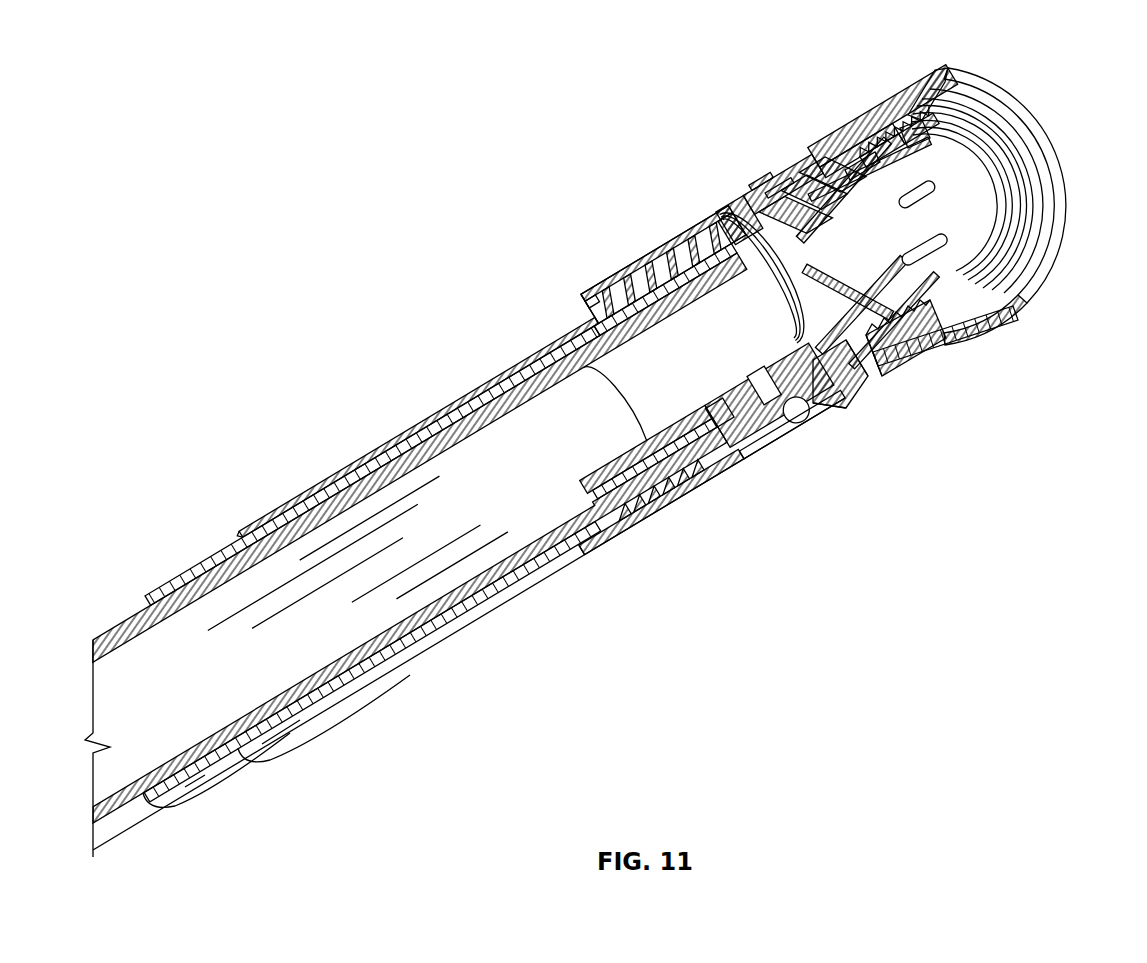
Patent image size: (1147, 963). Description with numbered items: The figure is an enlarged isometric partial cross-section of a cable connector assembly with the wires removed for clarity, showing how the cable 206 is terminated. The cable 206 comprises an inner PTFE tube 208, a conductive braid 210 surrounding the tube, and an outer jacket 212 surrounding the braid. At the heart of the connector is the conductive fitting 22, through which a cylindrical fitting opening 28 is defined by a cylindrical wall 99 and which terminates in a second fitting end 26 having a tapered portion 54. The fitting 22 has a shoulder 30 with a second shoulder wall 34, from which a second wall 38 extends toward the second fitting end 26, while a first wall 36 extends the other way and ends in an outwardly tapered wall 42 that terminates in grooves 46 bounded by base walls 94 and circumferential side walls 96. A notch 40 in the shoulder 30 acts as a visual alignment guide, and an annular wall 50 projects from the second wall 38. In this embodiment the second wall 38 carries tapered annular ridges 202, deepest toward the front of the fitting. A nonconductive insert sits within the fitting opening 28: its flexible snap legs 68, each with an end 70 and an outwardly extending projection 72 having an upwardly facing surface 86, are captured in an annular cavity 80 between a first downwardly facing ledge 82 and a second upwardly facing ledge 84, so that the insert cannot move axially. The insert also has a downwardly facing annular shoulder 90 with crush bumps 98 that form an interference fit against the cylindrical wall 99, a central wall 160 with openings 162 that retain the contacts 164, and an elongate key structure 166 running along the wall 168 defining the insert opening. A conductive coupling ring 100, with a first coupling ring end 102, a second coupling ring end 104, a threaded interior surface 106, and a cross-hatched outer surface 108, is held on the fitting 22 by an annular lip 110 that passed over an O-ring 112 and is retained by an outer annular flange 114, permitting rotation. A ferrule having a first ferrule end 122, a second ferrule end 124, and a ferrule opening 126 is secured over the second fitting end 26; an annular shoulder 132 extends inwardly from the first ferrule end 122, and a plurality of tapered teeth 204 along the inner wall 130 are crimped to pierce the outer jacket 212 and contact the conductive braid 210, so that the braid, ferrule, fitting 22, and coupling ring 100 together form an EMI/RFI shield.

The fitting 22 is at (737, 444).
The second fitting end 26 is at (547, 345).
The fitting opening 28 is at (640, 400).
The shoulder 30 is at (785, 427).
The second shoulder wall 34 is at (757, 273).
The first wall 36 is at (833, 365).
The second wall 38 is at (685, 243).
The notch 40 is at (797, 420).
The outwardly tapered wall 42 is at (863, 380).
The grooves 46 is at (857, 163).
The annular wall 50 is at (727, 440).
The tapered portion 54 is at (585, 545).
The snap legs 68 is at (752, 200).
The end 70 is at (732, 208).
The outwardly extending projection 72 is at (770, 190).
The annular cavity 80 is at (765, 205).
The first downwardly facing ledge 82 is at (788, 187).
The second upwardly facing ledge 84 is at (757, 180).
The upwardly facing surfaces 86 is at (803, 173).
The downwardly facing annular shoulder 90 is at (920, 100).
The base walls 94 is at (870, 150).
The circumferential side walls 96 is at (893, 130).
The crush bumps 98 is at (950, 113).
The cylindrical wall 99 is at (960, 133).
The coupling ring 100 is at (967, 70).
The first coupling ring end 102 is at (987, 80).
The second coupling ring end 104 is at (823, 137).
The threaded interior surface 106 is at (912, 75).
The outer surface 108 is at (1023, 313).
The annular lip 110 is at (833, 150).
The O-ring 112 is at (852, 368).
The outer annular flange 114 is at (823, 412).
The first ferrule end 122 is at (700, 222).
The second ferrule end 124 is at (593, 283).
The ferrule opening 126 is at (598, 530).
The inner wall 130 is at (596, 291).
The annular shoulder 132 is at (735, 238).
The central wall 160 is at (913, 220).
The openings 162 is at (987, 137).
The contacts 164 is at (967, 153).
The key structure 166 is at (985, 120).
The wall 168 is at (960, 253).
The annular ridges 202 is at (606, 316).
The teeth 204 is at (620, 516).
The cable 206 is at (300, 498).
The inner PTFE tube 208 is at (135, 817).
The conductive braid 210 is at (150, 600).
The outer jacket 212 is at (241, 534).